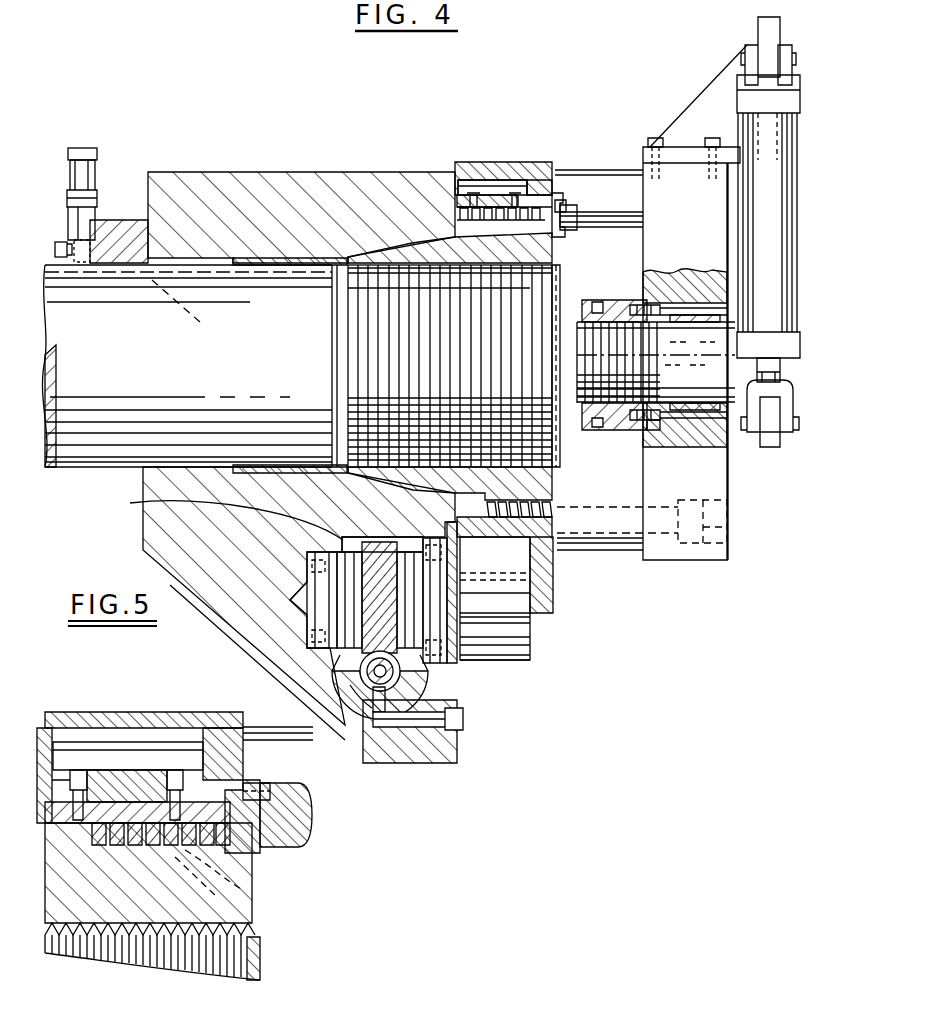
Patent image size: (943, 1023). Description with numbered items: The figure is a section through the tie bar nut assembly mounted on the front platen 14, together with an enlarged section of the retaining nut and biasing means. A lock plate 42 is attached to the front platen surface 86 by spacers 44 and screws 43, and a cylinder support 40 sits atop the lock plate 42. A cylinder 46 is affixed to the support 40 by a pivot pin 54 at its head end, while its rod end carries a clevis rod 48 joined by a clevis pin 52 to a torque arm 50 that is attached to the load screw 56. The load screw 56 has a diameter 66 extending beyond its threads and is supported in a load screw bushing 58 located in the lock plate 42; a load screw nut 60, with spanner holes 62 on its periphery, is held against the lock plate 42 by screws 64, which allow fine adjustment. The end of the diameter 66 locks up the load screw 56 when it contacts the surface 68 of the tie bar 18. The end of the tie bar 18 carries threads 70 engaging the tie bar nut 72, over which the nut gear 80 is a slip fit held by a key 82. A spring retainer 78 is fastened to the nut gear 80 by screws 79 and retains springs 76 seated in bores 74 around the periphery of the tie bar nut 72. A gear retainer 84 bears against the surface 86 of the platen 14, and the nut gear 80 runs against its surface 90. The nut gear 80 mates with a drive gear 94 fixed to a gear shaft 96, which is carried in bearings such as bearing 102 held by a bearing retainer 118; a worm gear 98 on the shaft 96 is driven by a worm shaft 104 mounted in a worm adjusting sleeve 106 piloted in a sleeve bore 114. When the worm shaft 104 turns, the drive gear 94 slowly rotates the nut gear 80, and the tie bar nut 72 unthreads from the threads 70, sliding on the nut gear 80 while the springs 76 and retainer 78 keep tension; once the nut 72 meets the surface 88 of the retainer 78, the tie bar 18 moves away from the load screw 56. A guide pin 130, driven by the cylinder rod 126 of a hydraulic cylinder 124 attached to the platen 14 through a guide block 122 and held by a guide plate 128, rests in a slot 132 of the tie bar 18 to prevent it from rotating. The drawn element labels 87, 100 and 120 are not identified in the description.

In FIG. 4, the front platen 14 is at (288, 173).
In FIG. 4, the tie bar 18 is at (189, 366).
In FIG. 4, the cylinder support 40 is at (698, 98).
In FIG. 4, the lock plate 42 is at (705, 561).
In FIG. 4, the screws 43 is at (705, 531).
In FIG. 4, the spacers 44 is at (650, 588).
In FIG. 5, the spacers 44 is at (300, 767).
In FIG. 4, the cylinder 46 is at (760, 243).
In FIG. 4, the clevis rod 48 is at (790, 432).
In FIG. 4, the torque arm 50 is at (768, 436).
In FIG. 4, the clevis pin 52 is at (797, 440).
In FIG. 4, the pivot pin 54 is at (745, 58).
In FIG. 4, the load screw 56 is at (656, 362).
In FIG. 4, the load screw bushing 58 is at (690, 410).
In FIG. 4, the load screw nut 60 is at (623, 432).
In FIG. 4, the spanner holes 62 is at (596, 306).
In FIG. 4, the screws 64 is at (645, 300).
In FIG. 4, the diameter 66 is at (568, 410).
In FIG. 4, the surface 68 is at (563, 295).
In FIG. 4, the threads 70 is at (362, 367).
In FIG. 5, the threads 70 is at (88, 948).
In FIG. 4, the tie bar nut 72 is at (378, 250).
In FIG. 5, the tie bar nut 72 is at (95, 897).
In FIG. 4, the bores 74 is at (553, 575).
In FIG. 5, the bores 74 is at (230, 885).
In FIG. 4, the springs 76 is at (535, 502).
In FIG. 5, the springs 76 is at (235, 905).
In FIG. 4, the spring retainer 78 is at (565, 216).
In FIG. 5, the spring retainer 78 is at (285, 810).
In FIG. 4, the screws 79 is at (563, 207).
In FIG. 5, the screws 79 is at (268, 787).
In FIG. 4, the nut gear 80 is at (480, 190).
In FIG. 5, the nut gear 80 is at (152, 750).
In FIG. 4, the key 82 is at (445, 195).
In FIG. 5, the key 82 is at (80, 727).
In FIG. 4, the gear retainer 84 is at (500, 165).
In FIG. 5, the gear retainer 84 is at (185, 718).
In FIG. 4, the front platen surface 86 is at (458, 754).
In FIG. 5, the front platen surface 86 is at (65, 727).
In FIG. 4, the lower housing 87 is at (143, 540).
In FIG. 4, the surface 88 is at (560, 238).
In FIG. 5, the surface 88 is at (260, 848).
In FIG. 4, the surface 90 is at (520, 165).
In FIG. 5, the surface 90 is at (203, 728).
In FIG. 4, the drive gear 94 is at (470, 663).
In FIG. 4, the gear shaft 96 is at (462, 672).
In FIG. 4, the worm gear 98 is at (219, 516).
In FIG. 4, the worm bearing 100 is at (327, 612).
In FIG. 4, the bearing 102 is at (450, 660).
In FIG. 4, the worm shaft 104 is at (385, 678).
In FIG. 4, the worm adjusting sleeve 106 is at (347, 703).
In FIG. 4, the sleeve bore 114 is at (363, 703).
In FIG. 4, the bearing retainer 118 is at (455, 700).
In FIG. 4, the sleeve 120 is at (290, 262).
In FIG. 4, the guide block 122 is at (110, 222).
In FIG. 4, the hydraulic cylinder 124 is at (70, 148).
In FIG. 4, the cylinder rod 126 is at (97, 215).
In FIG. 4, the guide plate 128 is at (63, 258).
In FIG. 4, the guide pin 130 is at (84, 254).
In FIG. 4, the slot 132 is at (198, 310).